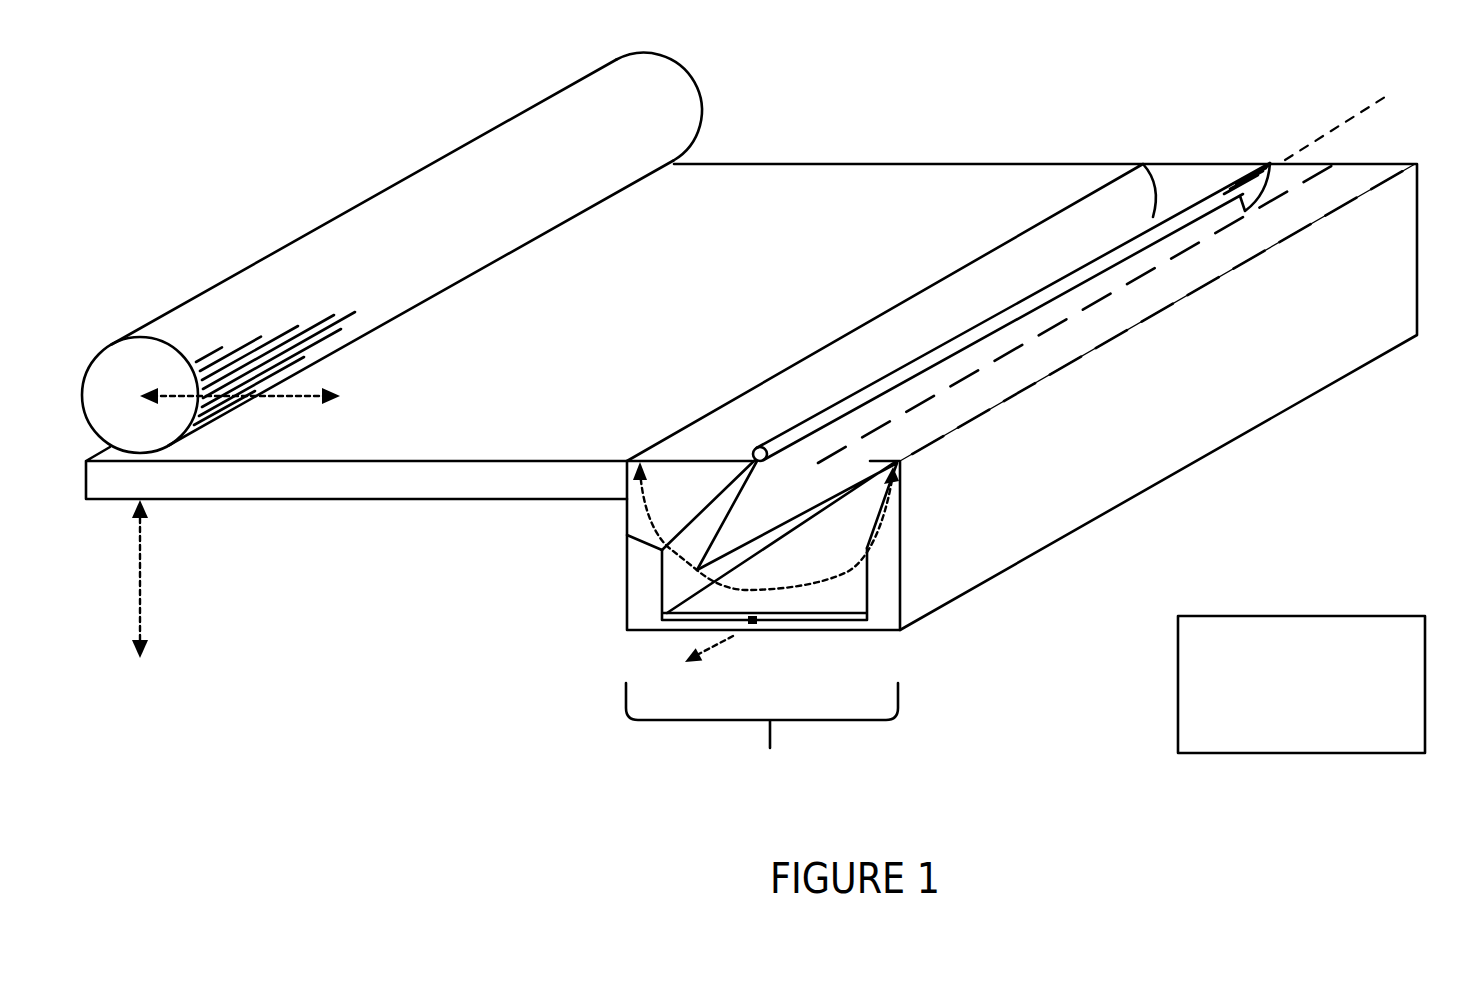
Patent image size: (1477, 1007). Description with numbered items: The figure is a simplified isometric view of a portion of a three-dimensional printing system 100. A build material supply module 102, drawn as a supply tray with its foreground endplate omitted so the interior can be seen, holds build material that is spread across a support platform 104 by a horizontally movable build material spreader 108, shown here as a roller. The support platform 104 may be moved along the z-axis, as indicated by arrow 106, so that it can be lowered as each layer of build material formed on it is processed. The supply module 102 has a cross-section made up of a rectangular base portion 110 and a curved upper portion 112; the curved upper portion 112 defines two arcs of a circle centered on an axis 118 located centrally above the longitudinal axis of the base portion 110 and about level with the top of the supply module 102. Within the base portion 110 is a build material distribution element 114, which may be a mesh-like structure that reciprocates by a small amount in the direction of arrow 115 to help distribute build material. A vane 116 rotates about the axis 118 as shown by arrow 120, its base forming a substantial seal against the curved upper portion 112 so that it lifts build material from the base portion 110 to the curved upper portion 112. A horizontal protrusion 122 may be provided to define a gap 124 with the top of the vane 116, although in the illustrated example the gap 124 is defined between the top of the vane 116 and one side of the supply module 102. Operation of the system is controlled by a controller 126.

The 3D printing system 100 is at (195, 108).
The build material supply module 102 is at (762, 732).
The support platform 104 is at (870, 164).
The arrow 106 is at (140, 588).
The build material spreader 108 is at (641, 73).
The rectangular base portion 110 is at (867, 585).
The curved upper portion 112 is at (1125, 207).
The build material distribution element 114 is at (710, 600).
The arrow 115 is at (722, 637).
The vane 116 is at (745, 486).
The axis 118 is at (1350, 120).
The arrow 120 is at (627, 537).
The horizontal protrusion 122 is at (1357, 175).
The gap 124 is at (1291, 172).
The controller 126 is at (1210, 614).